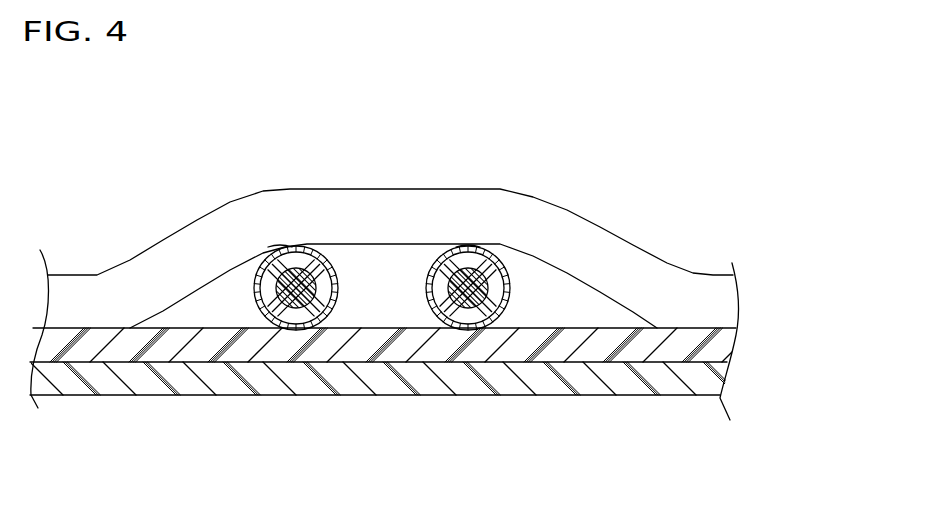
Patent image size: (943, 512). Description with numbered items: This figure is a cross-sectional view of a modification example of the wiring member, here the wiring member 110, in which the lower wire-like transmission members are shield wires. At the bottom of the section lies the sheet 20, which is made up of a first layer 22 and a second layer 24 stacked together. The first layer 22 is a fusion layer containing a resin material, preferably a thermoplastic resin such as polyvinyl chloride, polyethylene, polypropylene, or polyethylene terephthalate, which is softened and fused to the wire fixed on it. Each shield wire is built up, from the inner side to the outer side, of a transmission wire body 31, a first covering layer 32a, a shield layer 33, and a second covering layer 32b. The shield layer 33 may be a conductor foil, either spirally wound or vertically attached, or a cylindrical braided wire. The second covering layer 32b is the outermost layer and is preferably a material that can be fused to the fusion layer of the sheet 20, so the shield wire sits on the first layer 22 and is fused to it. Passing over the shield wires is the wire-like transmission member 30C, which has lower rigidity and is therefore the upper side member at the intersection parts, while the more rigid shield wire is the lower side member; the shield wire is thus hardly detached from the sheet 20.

The wiring member 110 is at (97, 137).
The wire-like transmission member 30C is at (392, 207).
The sheet 20 is at (790, 335).
The first layer 22 is at (717, 352).
The second layer 24 is at (717, 378).
The transmission wire body 31 is at (281, 321).
The first covering layer 32a is at (302, 323).
The second covering layer 32b is at (330, 322).
The shield layer 33 is at (317, 328).